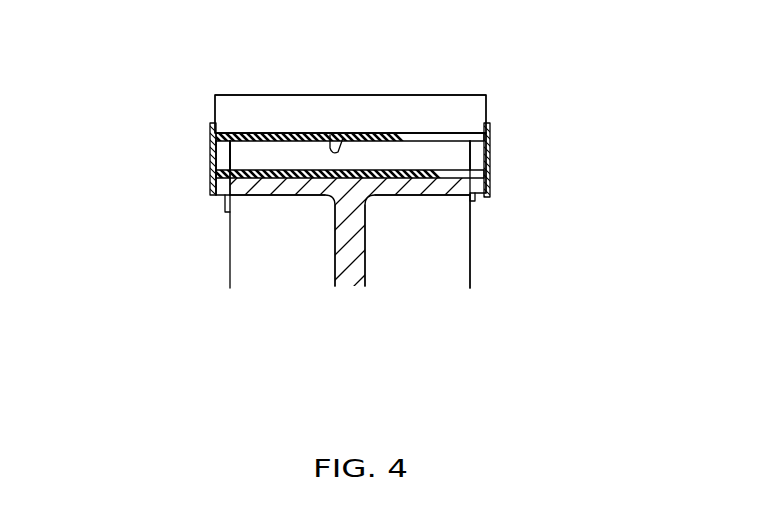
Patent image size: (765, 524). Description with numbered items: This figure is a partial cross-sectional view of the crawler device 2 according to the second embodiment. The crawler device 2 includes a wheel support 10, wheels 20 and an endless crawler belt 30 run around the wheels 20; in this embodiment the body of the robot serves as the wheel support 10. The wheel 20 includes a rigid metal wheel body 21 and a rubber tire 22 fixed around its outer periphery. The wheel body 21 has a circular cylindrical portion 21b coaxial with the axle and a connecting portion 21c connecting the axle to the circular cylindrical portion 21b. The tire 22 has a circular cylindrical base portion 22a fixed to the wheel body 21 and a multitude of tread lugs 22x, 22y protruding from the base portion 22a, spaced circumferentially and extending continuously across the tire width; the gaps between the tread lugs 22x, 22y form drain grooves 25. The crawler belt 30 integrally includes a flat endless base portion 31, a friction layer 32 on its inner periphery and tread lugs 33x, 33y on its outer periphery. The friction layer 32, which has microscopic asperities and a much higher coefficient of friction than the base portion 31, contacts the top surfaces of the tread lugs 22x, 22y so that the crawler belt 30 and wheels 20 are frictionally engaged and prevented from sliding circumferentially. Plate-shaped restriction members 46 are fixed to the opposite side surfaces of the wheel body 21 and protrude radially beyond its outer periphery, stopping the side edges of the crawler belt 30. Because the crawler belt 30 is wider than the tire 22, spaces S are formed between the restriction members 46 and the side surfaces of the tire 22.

The crawler device 2 is at (523, 215).
The wheel support 10 is at (490, 255).
The wheel 20 is at (450, 275).
The wheel body 21 is at (371, 279).
The circular cylindrical portion 21b is at (405, 196).
The connecting portion 21c is at (335, 259).
The tire 22 is at (215, 170).
The base portion 22a is at (260, 170).
The tread lug 22x is at (165, 129).
The tread lug 22y is at (243, 155).
The drain groove 25 is at (297, 150).
The crawler belt 30 is at (497, 102).
The base portion 31 is at (372, 135).
The friction layer 32 is at (330, 135).
The tread lug 33x is at (373, 76).
The tread lug 33y is at (433, 112).
The restriction member 46 is at (212, 181).
The space S is at (478, 167).